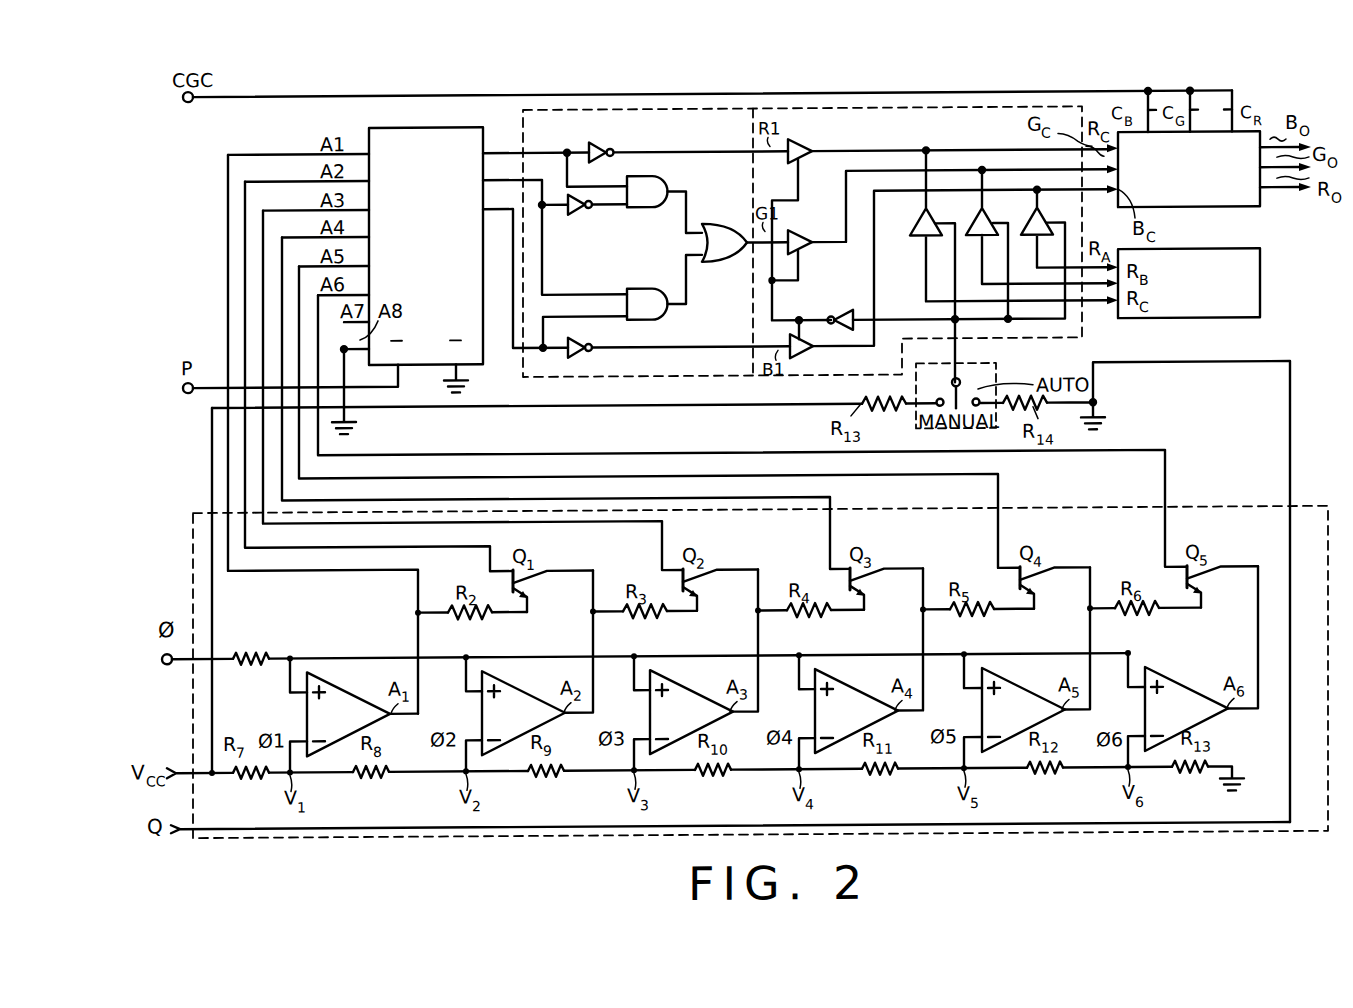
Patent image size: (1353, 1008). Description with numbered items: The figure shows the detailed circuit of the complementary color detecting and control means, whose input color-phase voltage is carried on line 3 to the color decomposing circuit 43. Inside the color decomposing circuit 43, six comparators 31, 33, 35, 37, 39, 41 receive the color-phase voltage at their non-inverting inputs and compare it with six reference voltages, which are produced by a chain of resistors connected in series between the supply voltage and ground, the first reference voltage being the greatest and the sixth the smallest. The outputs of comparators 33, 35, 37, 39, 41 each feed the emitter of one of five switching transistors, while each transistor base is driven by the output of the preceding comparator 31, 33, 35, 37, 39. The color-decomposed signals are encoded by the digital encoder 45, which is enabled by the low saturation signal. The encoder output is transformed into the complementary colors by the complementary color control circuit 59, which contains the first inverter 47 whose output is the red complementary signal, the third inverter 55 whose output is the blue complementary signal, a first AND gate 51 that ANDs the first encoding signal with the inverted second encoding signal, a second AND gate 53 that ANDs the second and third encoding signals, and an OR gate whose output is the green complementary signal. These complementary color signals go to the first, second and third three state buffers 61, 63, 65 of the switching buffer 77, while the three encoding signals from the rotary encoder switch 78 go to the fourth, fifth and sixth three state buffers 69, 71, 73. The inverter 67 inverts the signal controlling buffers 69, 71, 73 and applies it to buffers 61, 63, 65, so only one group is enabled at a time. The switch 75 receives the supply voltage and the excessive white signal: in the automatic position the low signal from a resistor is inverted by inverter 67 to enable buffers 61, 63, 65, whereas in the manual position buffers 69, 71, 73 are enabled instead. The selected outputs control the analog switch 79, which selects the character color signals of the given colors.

The control signal line 3 is at (403, 101).
The comparator 31 is at (357, 690).
The comparator 33 is at (532, 690).
The comparator 35 is at (701, 690).
The comparator 37 is at (865, 690).
The comparator 39 is at (1035, 690).
The comparator 41 is at (1195, 690).
The color decomposing circuit 43 is at (193, 588).
The digital encoder 45 is at (437, 126).
The first inverter 47 is at (600, 142).
The first AND gate 51 is at (640, 177).
The second AND gate 53 is at (648, 288).
The third inverter 55 is at (578, 215).
The complementary color control circuit 59 is at (523, 375).
The first three state buffer 61 is at (798, 140).
The second three state buffer 63 is at (806, 225).
The third three state buffer 65 is at (805, 359).
The inverter 67 is at (841, 311).
The fourth three state buffer 69 is at (936, 224).
The fifth three state buffer 71 is at (992, 224).
The sixth three state buffer 73 is at (1048, 224).
The switch 75 is at (997, 372).
The switching buffer 77 is at (1082, 338).
The rotary encoder switch 78 is at (1260, 290).
The analog switch 79 is at (1190, 210).